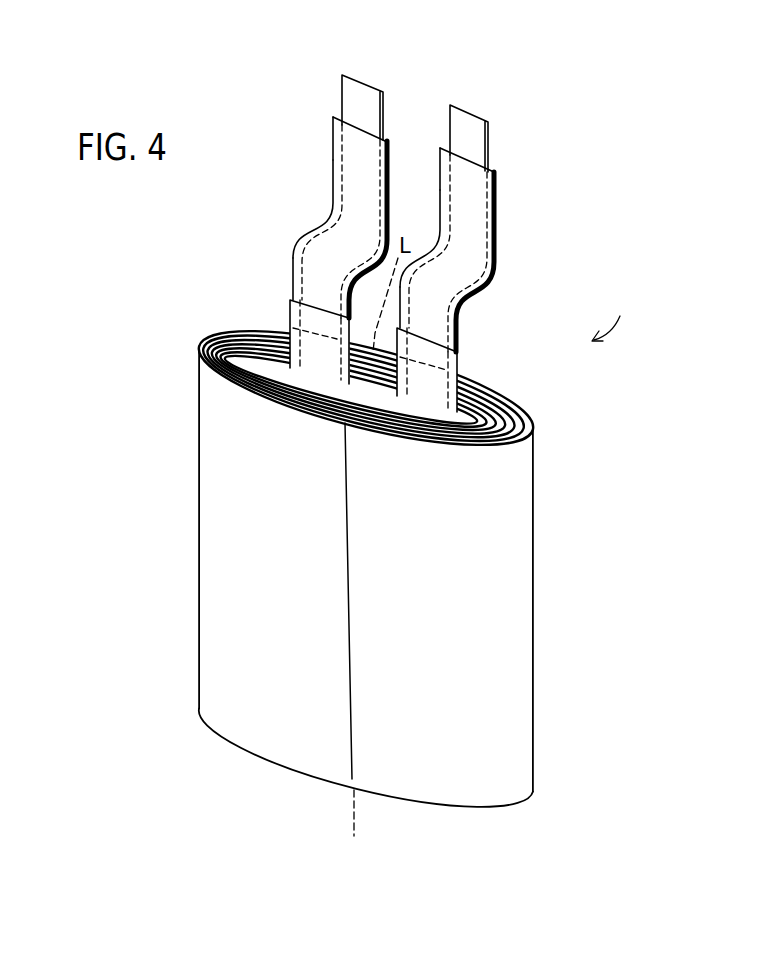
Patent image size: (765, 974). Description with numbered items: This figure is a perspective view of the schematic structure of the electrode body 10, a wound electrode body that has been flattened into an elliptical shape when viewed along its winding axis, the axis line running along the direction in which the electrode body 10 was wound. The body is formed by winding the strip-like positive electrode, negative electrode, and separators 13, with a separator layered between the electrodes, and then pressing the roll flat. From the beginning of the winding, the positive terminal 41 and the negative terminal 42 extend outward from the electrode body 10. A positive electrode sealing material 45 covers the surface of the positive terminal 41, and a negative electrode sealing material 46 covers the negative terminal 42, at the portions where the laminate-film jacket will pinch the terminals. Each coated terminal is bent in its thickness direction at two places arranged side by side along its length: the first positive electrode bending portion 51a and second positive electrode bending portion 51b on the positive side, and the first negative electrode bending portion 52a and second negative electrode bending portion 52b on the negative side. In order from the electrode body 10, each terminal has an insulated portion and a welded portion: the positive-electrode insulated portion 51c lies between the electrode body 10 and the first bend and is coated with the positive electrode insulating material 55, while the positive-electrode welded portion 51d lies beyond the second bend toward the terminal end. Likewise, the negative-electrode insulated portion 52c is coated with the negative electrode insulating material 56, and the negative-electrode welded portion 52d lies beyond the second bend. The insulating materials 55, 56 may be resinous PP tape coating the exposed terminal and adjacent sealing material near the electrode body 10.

The electrode body 10 is at (632, 305).
The separator 13 is at (218, 611).
The positive terminal 41 is at (472, 142).
The negative terminal 42 is at (358, 104).
The positive electrode sealing material 45 is at (472, 227).
The negative electrode sealing material 46 is at (350, 187).
The first positive electrode bending portion 51a is at (463, 307).
The second positive electrode bending portion 51b is at (492, 287).
The positive-electrode insulated portion 51c is at (435, 337).
The positive-electrode welded portion 51d is at (472, 190).
The first negative electrode bending portion 52a is at (300, 250).
The second negative electrode bending portion 52b is at (326, 228).
The negative-electrode insulated portion 52c is at (322, 289).
The negative-electrode welded portion 52d is at (347, 150).
The positive electrode insulating material 55 is at (448, 383).
The negative electrode insulating material 56 is at (287, 337).